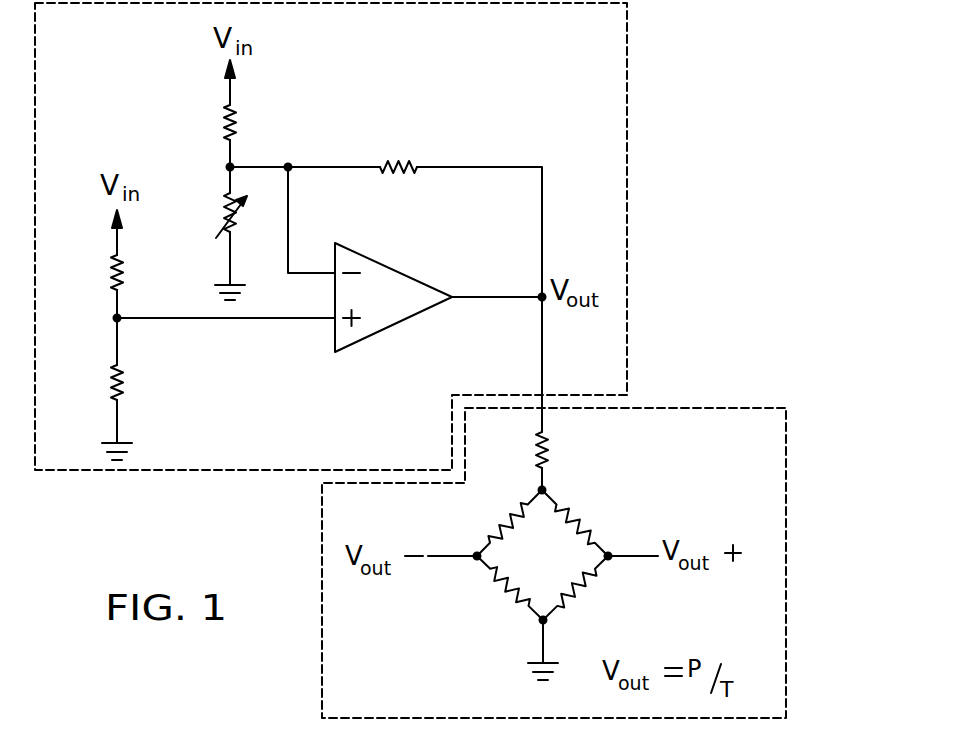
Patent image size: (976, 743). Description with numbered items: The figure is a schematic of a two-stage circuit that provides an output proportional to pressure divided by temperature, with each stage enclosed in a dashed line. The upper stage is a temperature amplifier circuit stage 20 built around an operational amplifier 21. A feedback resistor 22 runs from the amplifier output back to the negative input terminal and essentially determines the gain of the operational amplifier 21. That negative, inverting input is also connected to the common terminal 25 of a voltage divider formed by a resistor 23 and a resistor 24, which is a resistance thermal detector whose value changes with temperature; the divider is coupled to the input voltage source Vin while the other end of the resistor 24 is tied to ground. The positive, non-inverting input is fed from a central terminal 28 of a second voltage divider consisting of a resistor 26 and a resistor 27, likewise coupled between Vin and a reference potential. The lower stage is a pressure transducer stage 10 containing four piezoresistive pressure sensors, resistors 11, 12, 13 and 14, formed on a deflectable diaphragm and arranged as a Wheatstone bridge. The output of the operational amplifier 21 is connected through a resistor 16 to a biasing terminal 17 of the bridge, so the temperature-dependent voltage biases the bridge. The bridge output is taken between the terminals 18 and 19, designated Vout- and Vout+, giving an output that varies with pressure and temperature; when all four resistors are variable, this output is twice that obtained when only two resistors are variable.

The pressure transducer stage 10 is at (786, 535).
The pressure sensor resistor 11 is at (581, 595).
The pressure sensor resistor 12 is at (590, 522).
The pressure sensor resistor 13 is at (507, 597).
The pressure sensor resistor 14 is at (492, 510).
The resistor 16 is at (548, 432).
The biasing terminal 17 is at (540, 488).
The output terminal Vout- 18 is at (454, 571).
The output terminal Vout+ 19 is at (632, 571).
The temperature amplifier circuit stage 20 is at (627, 152).
The operational amplifier 21 is at (398, 278).
The feedback resistor R4 22 is at (418, 166).
The resistor R3 23 is at (235, 115).
The RTD resistor 24 is at (242, 218).
The common terminal 25 is at (232, 165).
The resistor R1 26 is at (127, 262).
The resistor R2 27 is at (128, 388).
The central terminal 28 is at (120, 320).